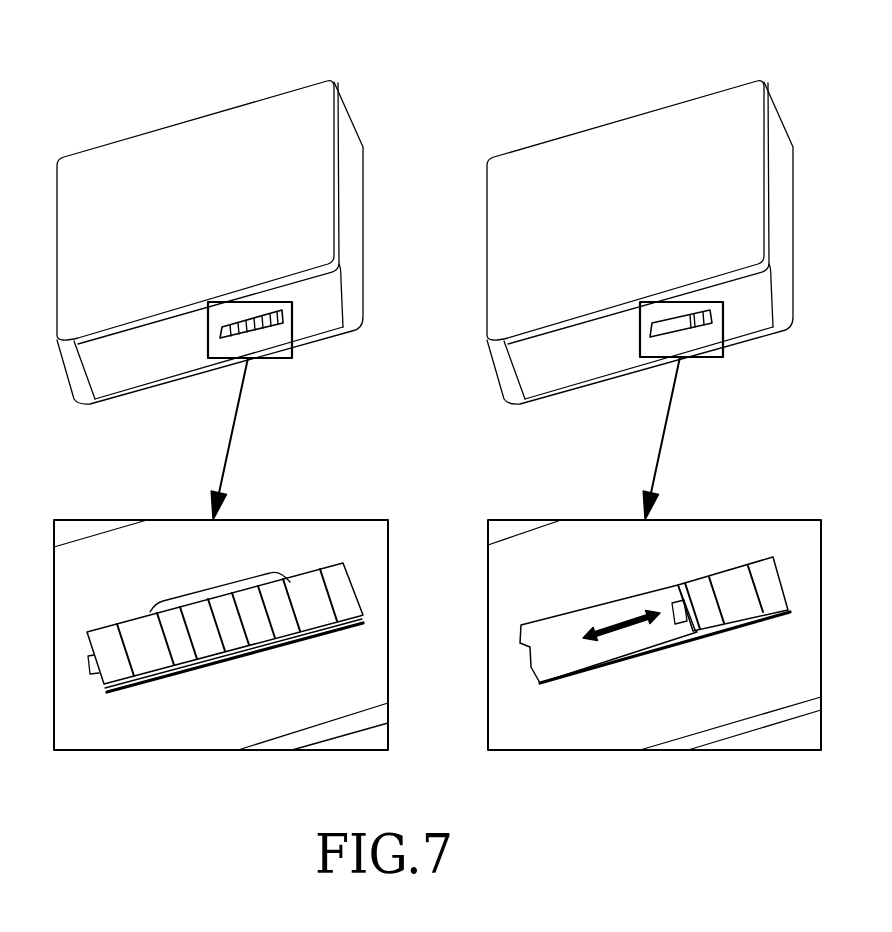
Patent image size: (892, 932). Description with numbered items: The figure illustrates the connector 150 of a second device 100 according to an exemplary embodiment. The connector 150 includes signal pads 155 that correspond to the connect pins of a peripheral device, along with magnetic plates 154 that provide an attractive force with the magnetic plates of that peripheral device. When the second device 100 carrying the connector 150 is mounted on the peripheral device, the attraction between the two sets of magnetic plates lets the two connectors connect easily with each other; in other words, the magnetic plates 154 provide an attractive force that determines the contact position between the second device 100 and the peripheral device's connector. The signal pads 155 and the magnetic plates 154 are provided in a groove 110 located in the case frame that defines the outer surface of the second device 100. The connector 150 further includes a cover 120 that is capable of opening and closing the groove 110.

The second device 100 is at (283, 87).
The groove 110 is at (157, 663).
The cover 120 is at (576, 652).
The connector 150 is at (260, 660).
The magnetic plates 154 is at (107, 648).
The signal pads 155 is at (205, 588).